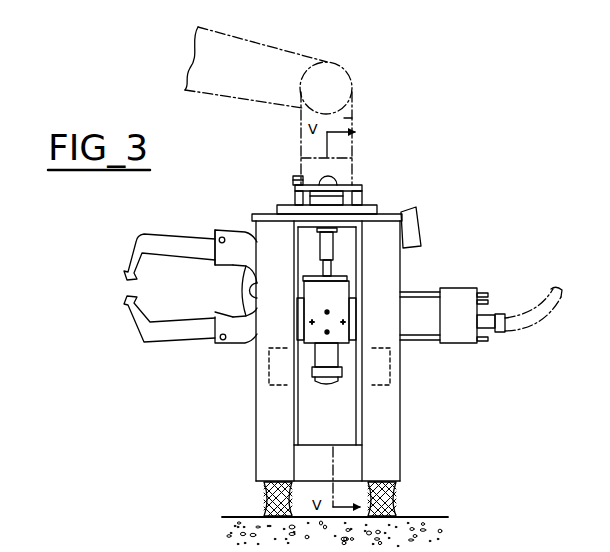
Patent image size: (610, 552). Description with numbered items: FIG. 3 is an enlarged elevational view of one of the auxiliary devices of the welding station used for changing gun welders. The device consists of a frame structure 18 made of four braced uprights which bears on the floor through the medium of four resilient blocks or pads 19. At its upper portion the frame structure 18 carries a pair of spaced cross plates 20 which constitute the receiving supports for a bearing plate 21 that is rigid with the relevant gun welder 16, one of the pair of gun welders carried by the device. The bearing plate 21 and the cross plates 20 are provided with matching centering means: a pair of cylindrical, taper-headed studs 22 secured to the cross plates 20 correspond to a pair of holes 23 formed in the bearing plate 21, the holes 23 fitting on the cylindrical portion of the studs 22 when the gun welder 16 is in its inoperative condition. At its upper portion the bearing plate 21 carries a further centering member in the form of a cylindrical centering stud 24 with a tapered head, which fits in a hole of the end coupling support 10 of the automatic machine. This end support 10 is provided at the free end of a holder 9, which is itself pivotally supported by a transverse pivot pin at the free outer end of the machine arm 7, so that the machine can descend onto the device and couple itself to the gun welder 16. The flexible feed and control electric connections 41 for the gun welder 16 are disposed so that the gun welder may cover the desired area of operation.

The arm 7 is at (242, 88).
The holder 9 is at (350, 116).
The end coupling support 10 is at (358, 175).
The gun welder 16 is at (188, 318).
The frame structure 18 is at (255, 414).
The resilient blocks or pads 19 is at (266, 497).
The cross plates 20 is at (277, 209).
The bearing plate 21 is at (363, 188).
The cylindrical taper-headed studs 22 is at (293, 180).
The holes 23 is at (295, 191).
The cylindrical centering stud 24 is at (319, 181).
The flexible feed and control electric connections 41 is at (525, 307).